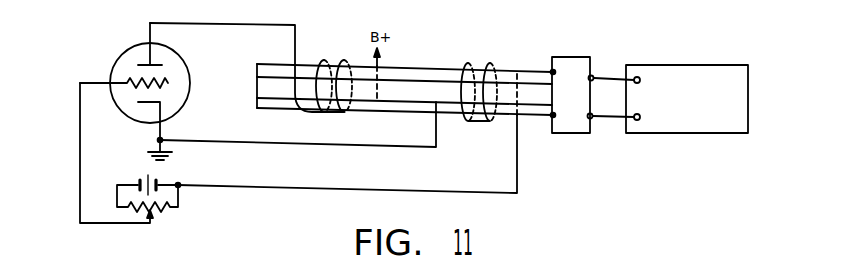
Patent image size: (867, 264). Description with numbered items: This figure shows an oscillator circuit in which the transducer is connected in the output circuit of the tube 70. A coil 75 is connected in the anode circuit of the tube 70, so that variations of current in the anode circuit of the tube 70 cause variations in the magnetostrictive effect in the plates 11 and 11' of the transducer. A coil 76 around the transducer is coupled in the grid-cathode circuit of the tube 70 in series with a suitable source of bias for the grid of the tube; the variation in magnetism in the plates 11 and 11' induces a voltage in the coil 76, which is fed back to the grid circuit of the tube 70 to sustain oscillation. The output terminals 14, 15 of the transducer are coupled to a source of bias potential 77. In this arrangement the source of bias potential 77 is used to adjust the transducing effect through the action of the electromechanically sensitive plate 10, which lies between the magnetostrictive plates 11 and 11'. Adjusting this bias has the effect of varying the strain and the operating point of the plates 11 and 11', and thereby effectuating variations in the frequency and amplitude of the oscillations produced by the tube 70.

The tube 70 is at (169, 49).
The electromechanically sensitive plate 10 is at (381, 87).
The plate 11 is at (389, 69).
The plate 11' is at (389, 109).
The coil 75 is at (346, 113).
The coil 76 is at (499, 65).
The output terminal 14 is at (594, 76).
The output terminal 15 is at (592, 119).
The source of bias potential 77 is at (700, 133).